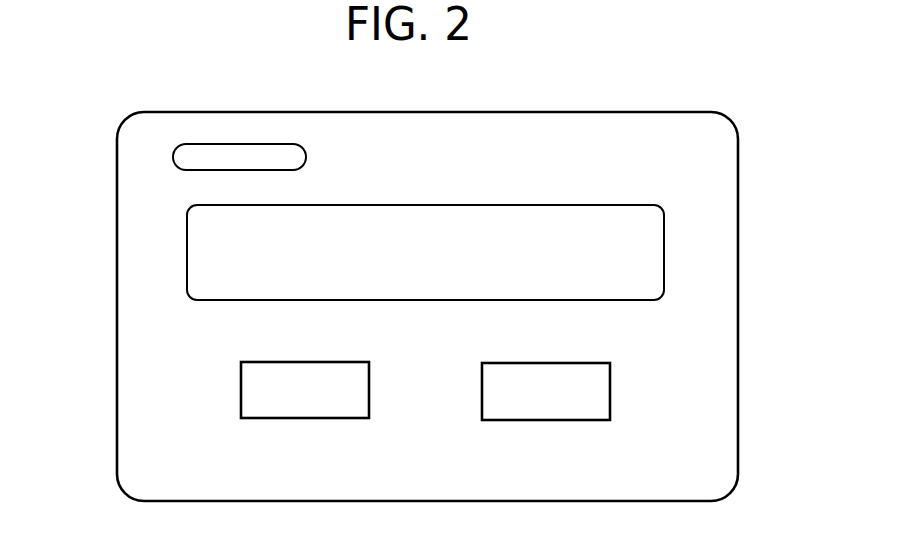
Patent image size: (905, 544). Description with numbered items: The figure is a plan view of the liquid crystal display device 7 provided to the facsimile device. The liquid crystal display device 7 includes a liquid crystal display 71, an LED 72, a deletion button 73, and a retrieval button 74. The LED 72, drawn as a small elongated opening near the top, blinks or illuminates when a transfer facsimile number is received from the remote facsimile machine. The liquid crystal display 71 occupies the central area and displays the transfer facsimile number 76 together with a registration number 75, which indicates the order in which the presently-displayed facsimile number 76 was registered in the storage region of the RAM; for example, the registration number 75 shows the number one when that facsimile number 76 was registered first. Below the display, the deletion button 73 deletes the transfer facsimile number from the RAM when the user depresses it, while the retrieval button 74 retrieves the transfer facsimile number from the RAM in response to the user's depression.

The liquid crystal display device 7 is at (452, 112).
The liquid crystal display 71 is at (572, 205).
The LED 72 is at (234, 145).
The deletion button 73 is at (241, 393).
The retrieval button 74 is at (610, 396).
The registration number 75 is at (307, 253).
The transfer facsimile number 76 is at (541, 254).